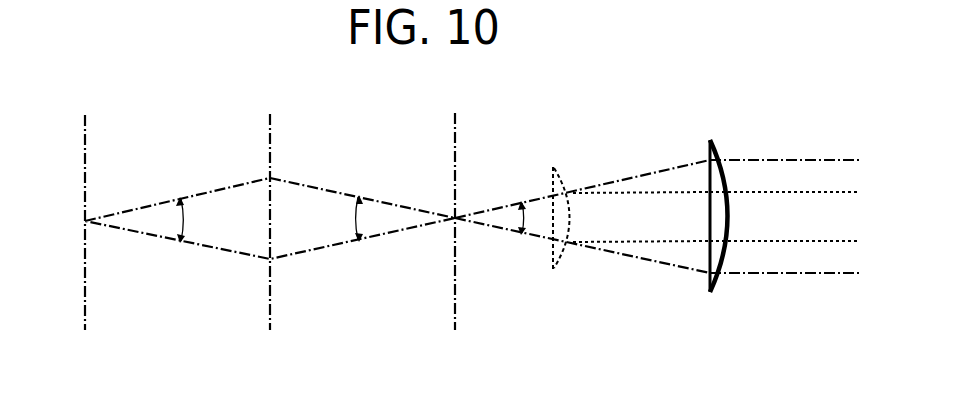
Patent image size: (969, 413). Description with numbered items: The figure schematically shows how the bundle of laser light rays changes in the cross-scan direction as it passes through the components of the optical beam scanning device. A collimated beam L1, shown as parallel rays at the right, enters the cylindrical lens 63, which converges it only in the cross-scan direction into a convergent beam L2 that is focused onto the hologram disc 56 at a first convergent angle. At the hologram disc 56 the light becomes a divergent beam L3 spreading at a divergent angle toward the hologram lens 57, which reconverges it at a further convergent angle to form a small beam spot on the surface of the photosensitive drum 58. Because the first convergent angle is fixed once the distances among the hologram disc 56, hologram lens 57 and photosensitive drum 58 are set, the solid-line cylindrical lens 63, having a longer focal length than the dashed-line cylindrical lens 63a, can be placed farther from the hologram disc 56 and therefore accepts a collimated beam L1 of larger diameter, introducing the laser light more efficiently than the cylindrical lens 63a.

The photosensitive drum 58 is at (87, 147).
The hologram lens 57 is at (271, 146).
The hologram disc 56 is at (456, 144).
The cylindrical lens 63 is at (718, 172).
The cylindrical lens 63a is at (568, 253).
The collimated beam L1 is at (795, 274).
The convergent beam L2 is at (497, 206).
The divergent beam L3 is at (305, 252).